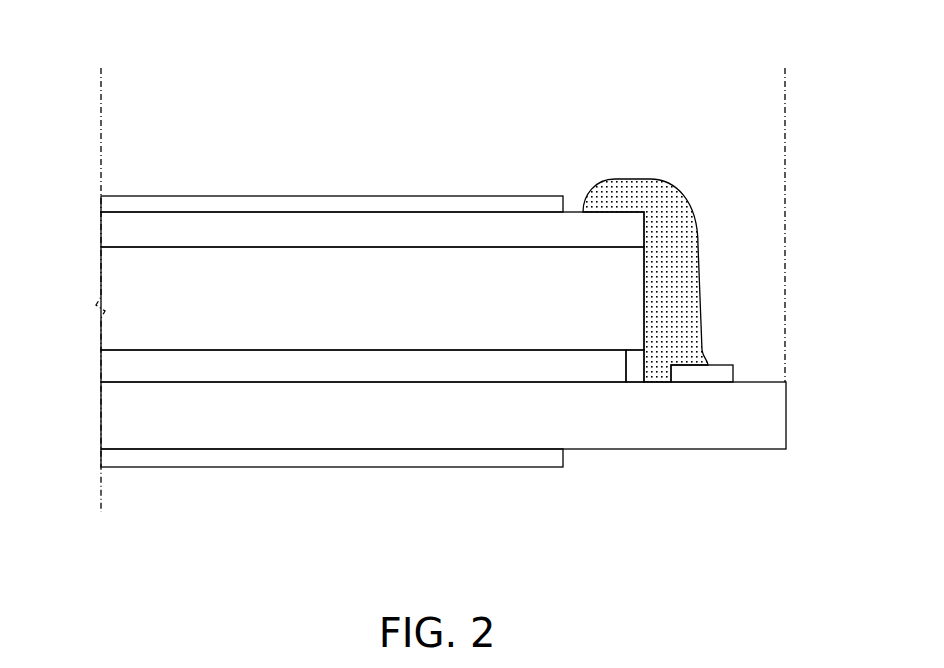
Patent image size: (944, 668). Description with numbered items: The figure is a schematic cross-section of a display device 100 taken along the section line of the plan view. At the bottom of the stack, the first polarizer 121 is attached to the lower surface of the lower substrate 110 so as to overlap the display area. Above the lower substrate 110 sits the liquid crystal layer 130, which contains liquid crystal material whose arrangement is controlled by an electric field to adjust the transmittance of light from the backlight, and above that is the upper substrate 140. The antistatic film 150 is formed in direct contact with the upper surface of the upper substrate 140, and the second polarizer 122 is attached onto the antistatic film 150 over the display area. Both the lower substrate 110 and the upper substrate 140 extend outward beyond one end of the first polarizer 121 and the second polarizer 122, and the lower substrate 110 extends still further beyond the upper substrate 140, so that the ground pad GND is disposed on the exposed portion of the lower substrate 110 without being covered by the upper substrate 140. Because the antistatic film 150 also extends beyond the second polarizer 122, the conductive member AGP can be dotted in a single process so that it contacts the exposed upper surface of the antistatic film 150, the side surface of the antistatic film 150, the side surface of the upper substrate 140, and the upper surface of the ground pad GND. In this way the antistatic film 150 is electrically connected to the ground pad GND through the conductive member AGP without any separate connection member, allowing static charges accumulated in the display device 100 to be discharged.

The display device 100 is at (717, 37).
The second polarizer 122 is at (106, 203).
The antistatic film 150 is at (106, 234).
The upper substrate 140 is at (106, 290).
The liquid crystal layer 130 is at (106, 366).
The lower substrate 110 is at (106, 419).
The first polarizer 121 is at (106, 460).
The ground pad GND is at (703, 374).
The conductive member AGP is at (687, 286).